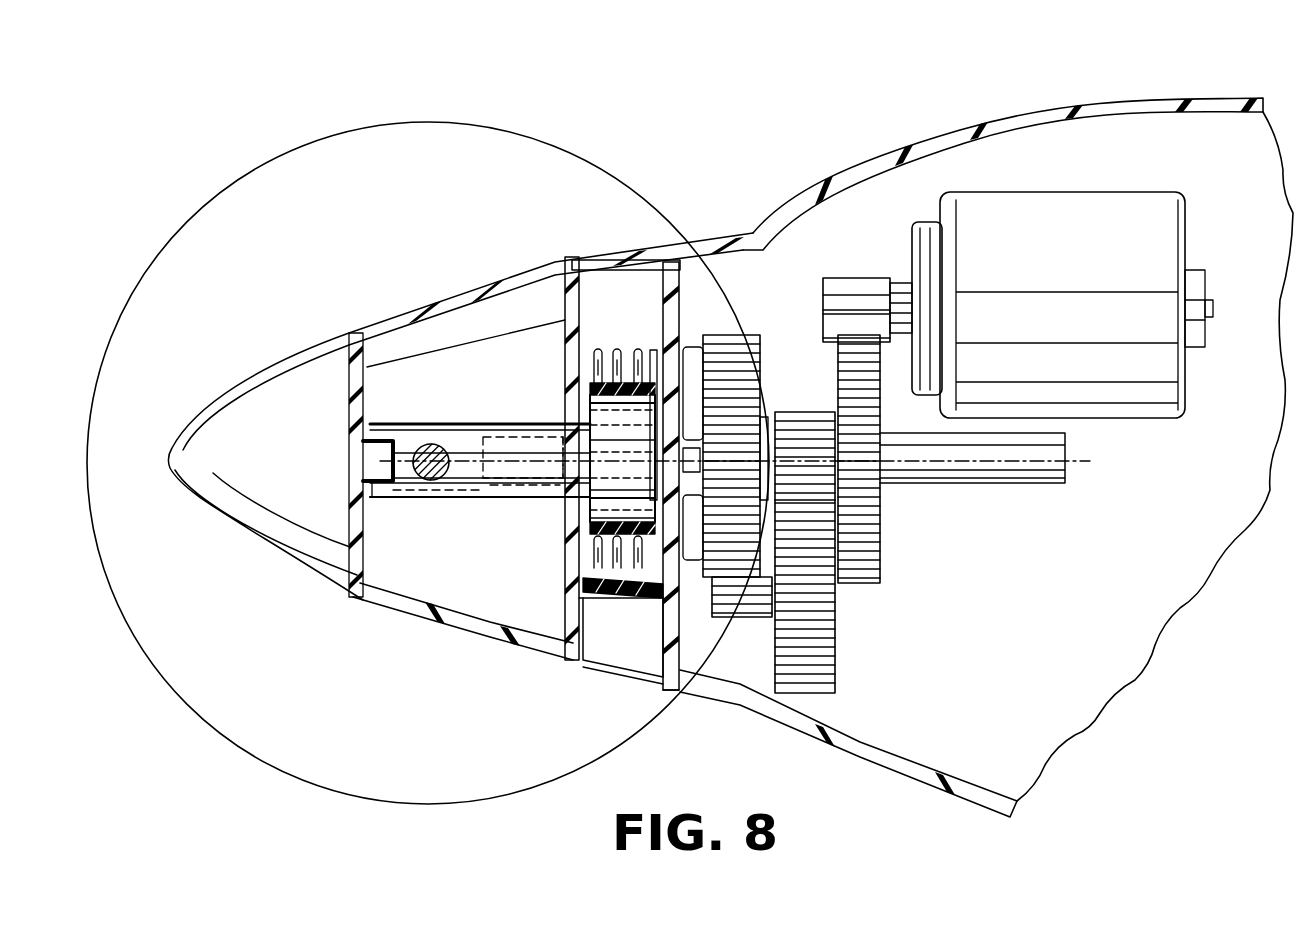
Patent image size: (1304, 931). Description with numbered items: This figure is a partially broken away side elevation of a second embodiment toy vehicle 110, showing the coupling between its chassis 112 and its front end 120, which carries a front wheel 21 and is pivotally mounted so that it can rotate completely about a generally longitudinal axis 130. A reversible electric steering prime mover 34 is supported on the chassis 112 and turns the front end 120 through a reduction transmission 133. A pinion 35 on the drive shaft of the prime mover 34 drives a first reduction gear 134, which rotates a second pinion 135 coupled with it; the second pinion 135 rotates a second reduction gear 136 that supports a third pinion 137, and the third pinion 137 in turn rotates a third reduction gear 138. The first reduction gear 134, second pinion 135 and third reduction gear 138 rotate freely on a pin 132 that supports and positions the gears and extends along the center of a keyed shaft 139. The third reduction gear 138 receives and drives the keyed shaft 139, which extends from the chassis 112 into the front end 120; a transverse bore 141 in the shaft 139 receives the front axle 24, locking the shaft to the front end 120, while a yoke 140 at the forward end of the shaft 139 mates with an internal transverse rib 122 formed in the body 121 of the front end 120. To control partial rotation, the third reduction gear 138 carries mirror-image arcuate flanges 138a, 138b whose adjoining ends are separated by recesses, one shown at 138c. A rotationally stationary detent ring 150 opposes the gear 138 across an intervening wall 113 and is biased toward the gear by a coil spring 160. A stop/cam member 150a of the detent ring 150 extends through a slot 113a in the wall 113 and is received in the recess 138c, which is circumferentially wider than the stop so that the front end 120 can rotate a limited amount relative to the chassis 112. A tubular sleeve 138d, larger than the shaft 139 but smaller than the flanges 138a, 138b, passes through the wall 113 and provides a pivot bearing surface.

The front wheel 21 is at (305, 148).
The toy vehicle 110 is at (936, 84).
The chassis 112 is at (1090, 95).
The body 121 is at (415, 302).
The front end 120 is at (272, 370).
The internal transverse rib 122 is at (378, 466).
The yoke 140 is at (390, 483).
The axis 130 is at (446, 425).
The keyed shaft 139 is at (487, 425).
The front axle 24 is at (427, 445).
The transverse bore 141 is at (440, 483).
The pin 132 is at (525, 488).
The wall 113 is at (670, 268).
The slot 113a is at (590, 572).
The recess 138c is at (626, 281).
The tubular sleeve 138d is at (605, 455).
The coil spring 160 is at (638, 372).
The detent ring 150 is at (598, 572).
The stop/cam member 150a is at (623, 641).
The arcuate flange 138a is at (692, 360).
The third reduction gear 138 is at (745, 335).
The third pinion 137 is at (736, 616).
The second pinion 135 is at (785, 412).
The second reduction gear 136 is at (830, 690).
The first reduction gear 134 is at (883, 555).
The reduction transmission 133 is at (857, 590).
The pinion 35 is at (856, 278).
The steering prime mover 34 is at (1100, 193).
The arcuate flange 138b is at (705, 695).